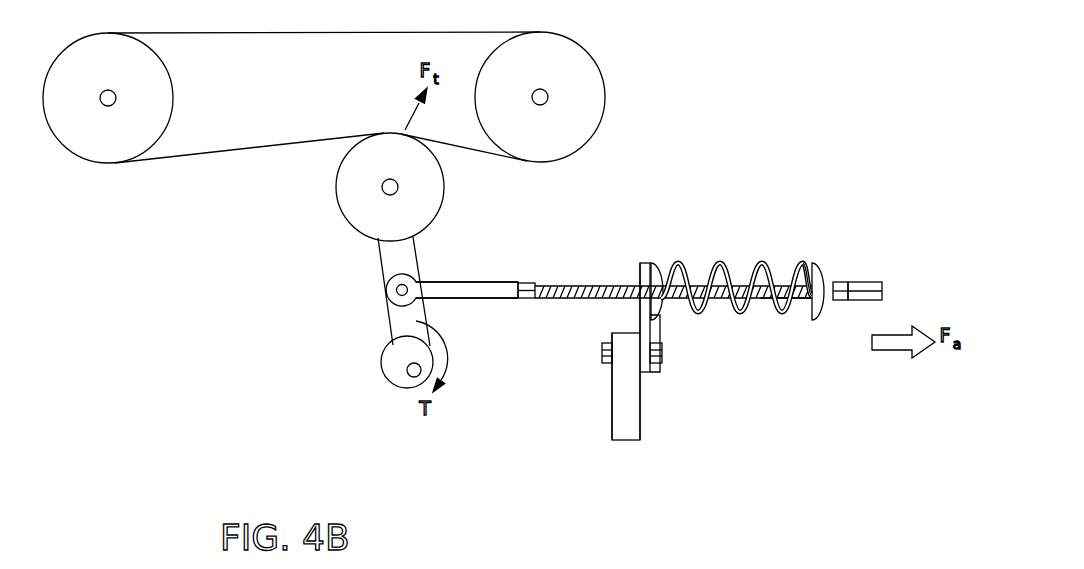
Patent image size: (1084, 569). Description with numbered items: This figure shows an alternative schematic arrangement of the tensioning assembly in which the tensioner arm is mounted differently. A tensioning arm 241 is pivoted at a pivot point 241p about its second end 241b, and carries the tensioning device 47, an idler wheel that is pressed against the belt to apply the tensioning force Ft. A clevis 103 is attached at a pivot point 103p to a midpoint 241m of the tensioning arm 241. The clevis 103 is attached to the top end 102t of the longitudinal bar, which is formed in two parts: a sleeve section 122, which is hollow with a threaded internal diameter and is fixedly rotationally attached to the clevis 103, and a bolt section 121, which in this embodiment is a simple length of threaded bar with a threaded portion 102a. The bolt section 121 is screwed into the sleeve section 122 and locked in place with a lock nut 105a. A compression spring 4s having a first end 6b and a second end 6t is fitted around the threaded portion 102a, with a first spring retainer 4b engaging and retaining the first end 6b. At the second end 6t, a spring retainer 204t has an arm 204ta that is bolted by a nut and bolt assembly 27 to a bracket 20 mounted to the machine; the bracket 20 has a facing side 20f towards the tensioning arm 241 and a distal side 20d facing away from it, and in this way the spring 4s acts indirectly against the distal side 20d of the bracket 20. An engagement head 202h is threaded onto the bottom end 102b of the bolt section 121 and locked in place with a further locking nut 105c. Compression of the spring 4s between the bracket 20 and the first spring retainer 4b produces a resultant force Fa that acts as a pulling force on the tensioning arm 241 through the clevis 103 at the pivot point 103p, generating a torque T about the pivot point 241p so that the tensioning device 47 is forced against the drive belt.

The tensioning device 47 is at (375, 158).
The tensioning arm 241 is at (391, 252).
The midpoint 241m is at (372, 265).
The second end 241b is at (376, 350).
The pivot point 241p is at (413, 370).
The clevis 103 is at (420, 282).
The pivot point 103p is at (386, 290).
The sleeve section 122 is at (478, 300).
The top end 102t is at (460, 288).
The lock nut 105a is at (525, 282).
The threaded portion 102a is at (745, 265).
The bolt section 121 is at (765, 300).
The bottom end 102b is at (805, 312).
The second end of spring 6t is at (669, 262).
The first end of spring 6b is at (808, 262).
The compression spring 4s is at (700, 313).
The first spring retainer 4b is at (825, 316).
The locking nut 105c is at (840, 282).
The engagement head 202h is at (870, 282).
The spring retainer 204t is at (645, 265).
The arm 204ta is at (640, 313).
The nut and bolt assembly 27 is at (668, 368).
The bracket 20 is at (628, 422).
The facing side 20f is at (605, 423).
The distal side 20d is at (643, 415).